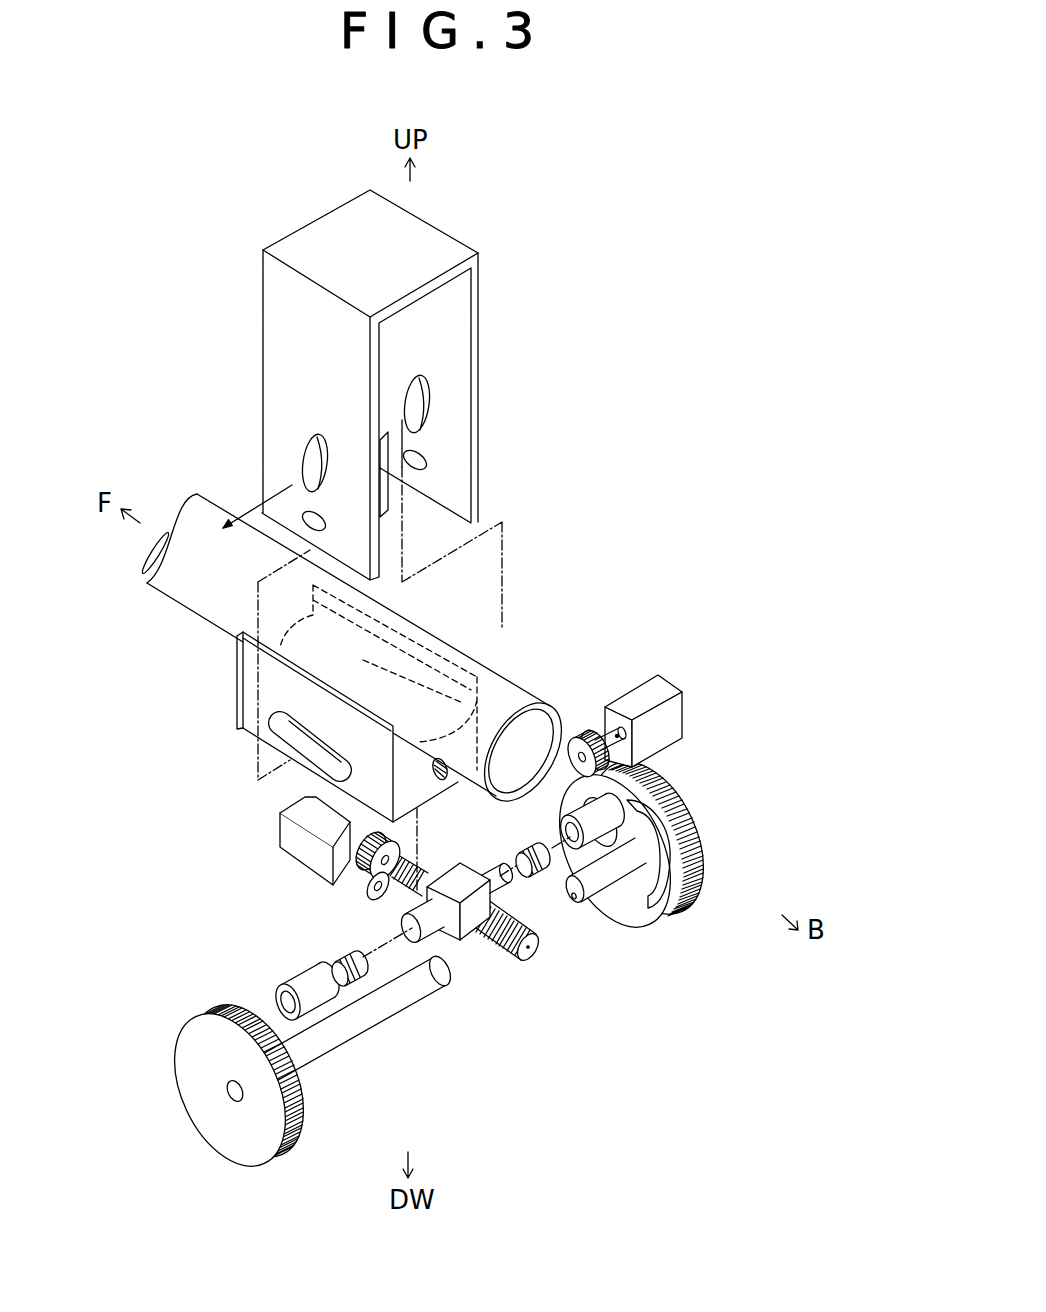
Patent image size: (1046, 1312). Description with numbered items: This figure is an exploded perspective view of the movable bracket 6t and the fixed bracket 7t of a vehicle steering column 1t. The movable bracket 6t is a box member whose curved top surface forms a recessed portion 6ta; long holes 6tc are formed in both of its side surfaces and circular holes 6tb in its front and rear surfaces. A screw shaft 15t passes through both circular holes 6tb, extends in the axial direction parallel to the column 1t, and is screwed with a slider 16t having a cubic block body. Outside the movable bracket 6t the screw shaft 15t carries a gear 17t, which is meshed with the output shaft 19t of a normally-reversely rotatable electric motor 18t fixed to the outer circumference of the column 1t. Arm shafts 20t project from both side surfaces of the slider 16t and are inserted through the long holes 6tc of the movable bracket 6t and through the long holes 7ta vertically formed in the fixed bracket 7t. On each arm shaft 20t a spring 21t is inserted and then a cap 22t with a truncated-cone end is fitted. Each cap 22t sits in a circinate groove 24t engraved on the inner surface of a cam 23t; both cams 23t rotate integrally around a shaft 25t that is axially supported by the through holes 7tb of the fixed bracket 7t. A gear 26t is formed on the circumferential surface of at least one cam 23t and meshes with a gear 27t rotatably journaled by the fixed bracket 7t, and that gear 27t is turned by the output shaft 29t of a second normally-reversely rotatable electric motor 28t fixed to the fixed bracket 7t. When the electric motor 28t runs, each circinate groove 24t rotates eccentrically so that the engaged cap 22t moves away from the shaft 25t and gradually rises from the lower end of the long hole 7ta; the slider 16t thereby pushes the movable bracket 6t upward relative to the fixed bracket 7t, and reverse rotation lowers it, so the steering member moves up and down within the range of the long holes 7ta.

The column 1t is at (493, 675).
The fixed bracket 7t is at (420, 232).
The long hole 7ta is at (302, 450).
The through hole 7tb is at (306, 515).
The movable bracket 6t is at (237, 663).
The recessed portion 6ta is at (420, 625).
The circular hole 6tb is at (237, 695).
The long hole 6tc is at (262, 720).
The electric motor 18t is at (278, 824).
The gear 17t is at (355, 858).
The output shaft 19t is at (366, 892).
The arm shaft 20t is at (500, 880).
The slider 16t is at (446, 863).
The screw shaft 15t is at (507, 960).
The spring 21t is at (538, 872).
The cap 22t is at (567, 823).
The shaft 25t is at (356, 1034).
The cam 23t is at (665, 790).
The circinate groove 24t is at (680, 880).
The gear 26t is at (692, 828).
The gear 27t is at (582, 740).
The electric motor 28t is at (663, 687).
The output shaft 29t is at (616, 728).